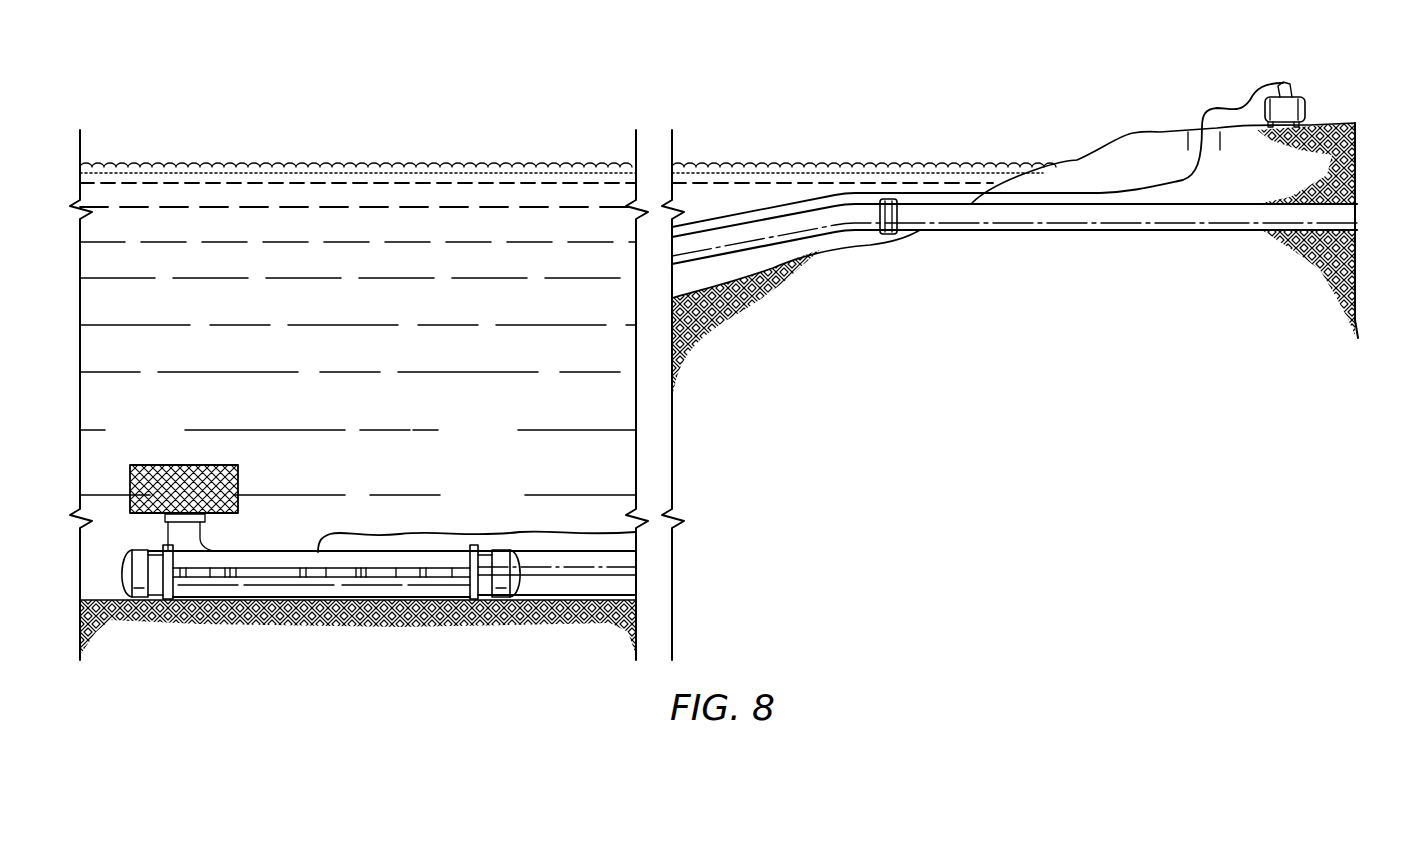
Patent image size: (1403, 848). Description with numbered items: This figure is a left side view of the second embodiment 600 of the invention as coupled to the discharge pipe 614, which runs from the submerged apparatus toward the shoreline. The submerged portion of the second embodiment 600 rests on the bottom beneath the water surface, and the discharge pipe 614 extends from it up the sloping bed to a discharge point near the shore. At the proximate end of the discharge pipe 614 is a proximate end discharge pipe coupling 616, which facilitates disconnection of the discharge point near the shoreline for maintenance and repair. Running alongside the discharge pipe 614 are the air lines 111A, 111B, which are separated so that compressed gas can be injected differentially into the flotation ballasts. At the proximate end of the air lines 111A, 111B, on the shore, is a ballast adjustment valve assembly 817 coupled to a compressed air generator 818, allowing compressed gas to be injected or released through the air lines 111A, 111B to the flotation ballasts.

The second embodiment 600 is at (343, 459).
The air line 111A is at (483, 532).
The air line 111B is at (800, 317).
The discharge pipe 614 is at (590, 543).
The proximate end discharge pipe coupling 616 is at (884, 221).
The ballast adjustment valve assembly 817 is at (1266, 82).
The compressed air generator 818 is at (1307, 103).